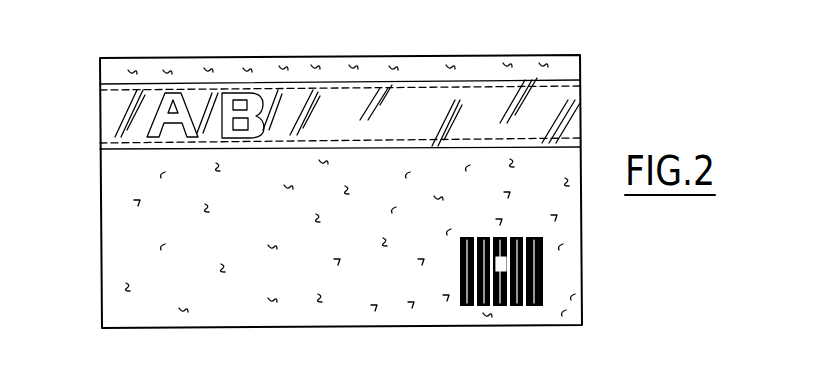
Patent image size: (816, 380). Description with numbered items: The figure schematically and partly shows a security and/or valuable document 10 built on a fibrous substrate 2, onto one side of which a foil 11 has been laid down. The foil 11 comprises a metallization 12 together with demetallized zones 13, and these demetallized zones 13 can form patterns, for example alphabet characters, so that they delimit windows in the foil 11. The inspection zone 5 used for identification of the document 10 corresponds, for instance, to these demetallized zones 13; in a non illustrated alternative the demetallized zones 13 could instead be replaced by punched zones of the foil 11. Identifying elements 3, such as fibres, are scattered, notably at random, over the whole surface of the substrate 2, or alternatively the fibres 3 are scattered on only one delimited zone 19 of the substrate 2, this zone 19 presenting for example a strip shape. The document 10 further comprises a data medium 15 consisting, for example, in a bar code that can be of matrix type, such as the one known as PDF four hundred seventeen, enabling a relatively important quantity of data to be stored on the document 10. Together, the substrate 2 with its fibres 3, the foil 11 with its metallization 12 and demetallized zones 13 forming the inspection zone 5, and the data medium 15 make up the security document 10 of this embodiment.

The substrate 2 is at (547, 175).
The identifying elements 3 is at (184, 128).
The inspection zone 5 is at (140, 133).
The document 10 is at (596, 100).
The foil 11 is at (290, 121).
The metallization 12 is at (207, 100).
The demetallized zones 13 is at (158, 122).
The data medium 15 is at (543, 275).
The delimited zone 19 is at (485, 100).